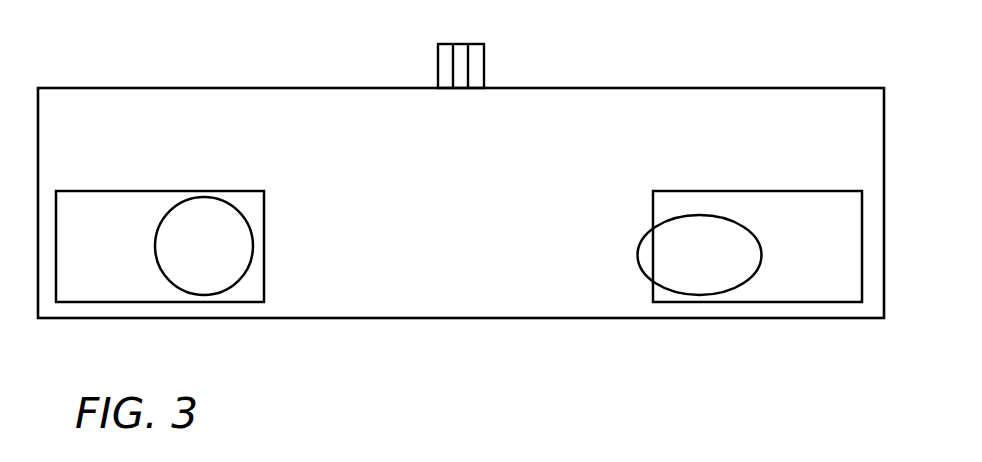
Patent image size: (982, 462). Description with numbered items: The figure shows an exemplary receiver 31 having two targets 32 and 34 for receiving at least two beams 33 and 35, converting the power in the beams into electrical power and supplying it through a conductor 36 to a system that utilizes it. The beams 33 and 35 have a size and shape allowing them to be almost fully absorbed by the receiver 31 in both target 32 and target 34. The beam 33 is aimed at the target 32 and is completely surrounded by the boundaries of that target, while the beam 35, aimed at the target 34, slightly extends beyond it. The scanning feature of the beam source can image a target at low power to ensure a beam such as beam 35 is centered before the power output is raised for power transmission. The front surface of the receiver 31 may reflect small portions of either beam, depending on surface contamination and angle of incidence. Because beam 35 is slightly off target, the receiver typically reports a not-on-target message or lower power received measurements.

The receiver 31 is at (804, 87).
The target 32 is at (264, 258).
The beam 33 is at (203, 295).
The target 34 is at (653, 205).
The beam 35 is at (697, 295).
The conductor 36 is at (438, 47).